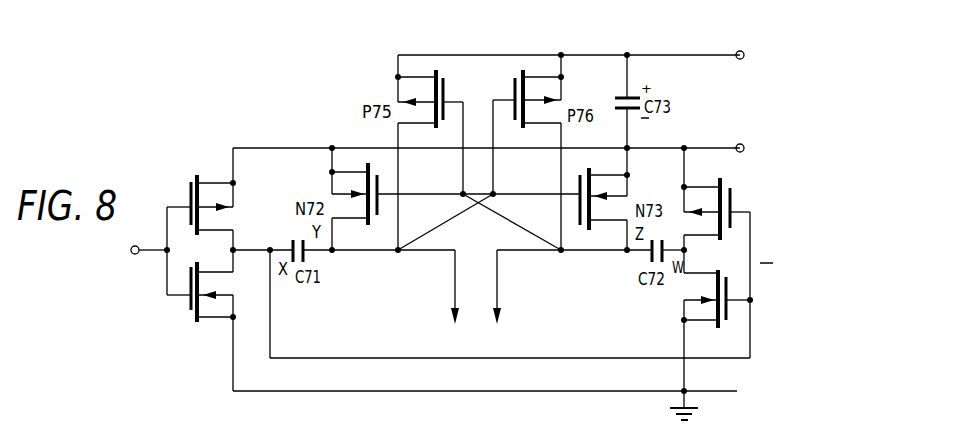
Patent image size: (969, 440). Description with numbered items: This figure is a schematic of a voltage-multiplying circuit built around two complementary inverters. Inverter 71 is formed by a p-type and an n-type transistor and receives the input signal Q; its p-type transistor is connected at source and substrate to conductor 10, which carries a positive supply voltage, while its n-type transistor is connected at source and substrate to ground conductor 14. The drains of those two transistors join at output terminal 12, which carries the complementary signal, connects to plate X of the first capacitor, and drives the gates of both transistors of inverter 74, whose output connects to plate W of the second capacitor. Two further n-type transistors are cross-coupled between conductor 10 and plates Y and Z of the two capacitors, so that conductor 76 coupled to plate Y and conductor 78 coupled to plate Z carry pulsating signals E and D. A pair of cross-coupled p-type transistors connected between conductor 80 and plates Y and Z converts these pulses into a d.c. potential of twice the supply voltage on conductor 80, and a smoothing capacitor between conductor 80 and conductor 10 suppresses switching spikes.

The conductor 10 is at (332, 147).
The output terminal 12 is at (232, 250).
The ground conductor 14 is at (692, 378).
The complementary inverter 71 is at (190, 265).
The complementary inverter 74 is at (745, 266).
The conductor 76 is at (454, 283).
The conductor 78 is at (498, 286).
The conductor 80 is at (628, 54).